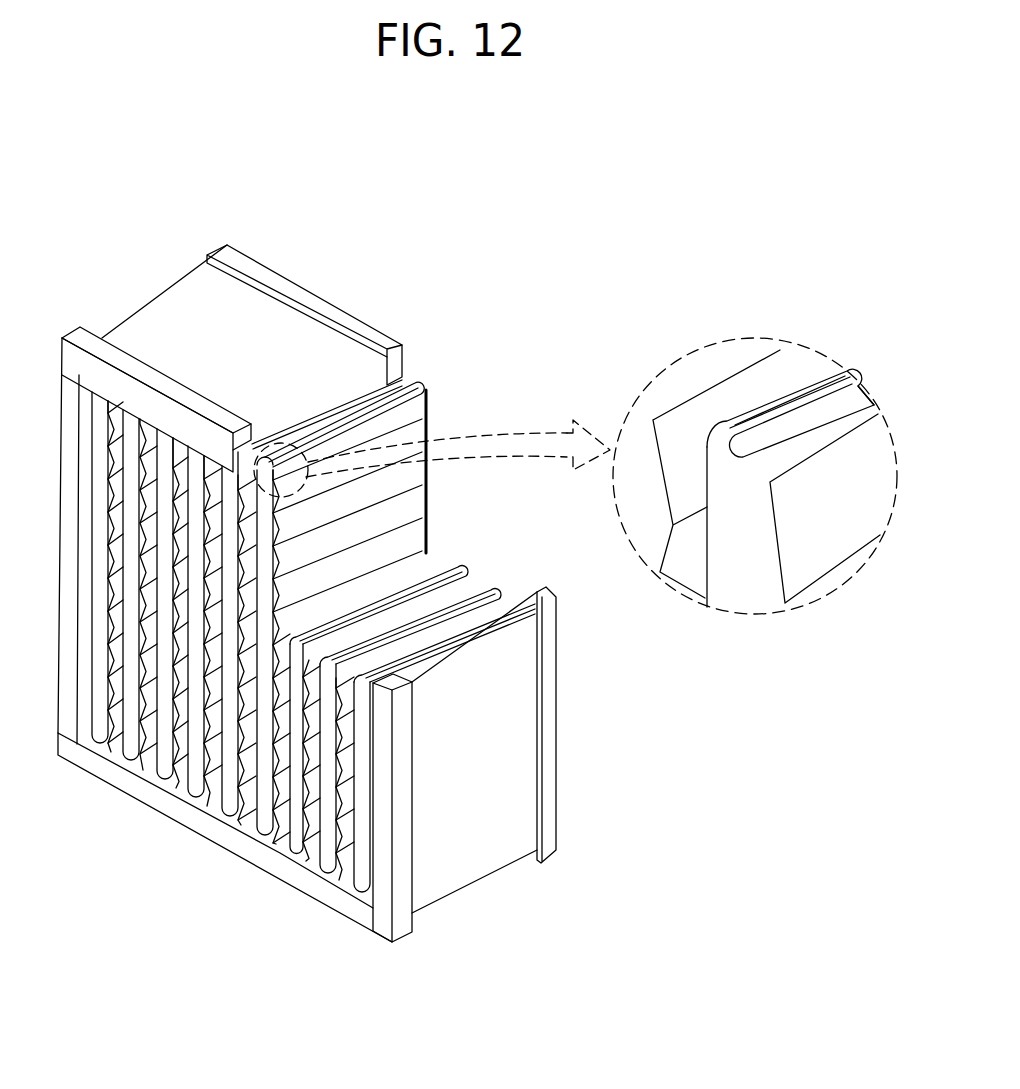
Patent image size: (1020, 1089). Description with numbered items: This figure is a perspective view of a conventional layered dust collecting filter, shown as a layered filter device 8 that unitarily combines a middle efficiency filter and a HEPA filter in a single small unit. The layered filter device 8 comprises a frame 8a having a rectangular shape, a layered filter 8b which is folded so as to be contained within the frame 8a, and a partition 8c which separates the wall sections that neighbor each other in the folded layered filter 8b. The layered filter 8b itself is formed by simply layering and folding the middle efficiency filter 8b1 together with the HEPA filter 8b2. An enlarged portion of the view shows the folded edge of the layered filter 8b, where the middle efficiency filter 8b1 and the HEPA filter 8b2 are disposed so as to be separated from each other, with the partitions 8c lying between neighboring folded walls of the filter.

The layered filter device 8 is at (436, 283).
The frame 8a is at (163, 318).
The layered filter 8b is at (430, 413).
The middle efficiency filter 8b1 is at (808, 366).
The HEPA filter 8b2 is at (858, 386).
The partition 8c is at (407, 520).